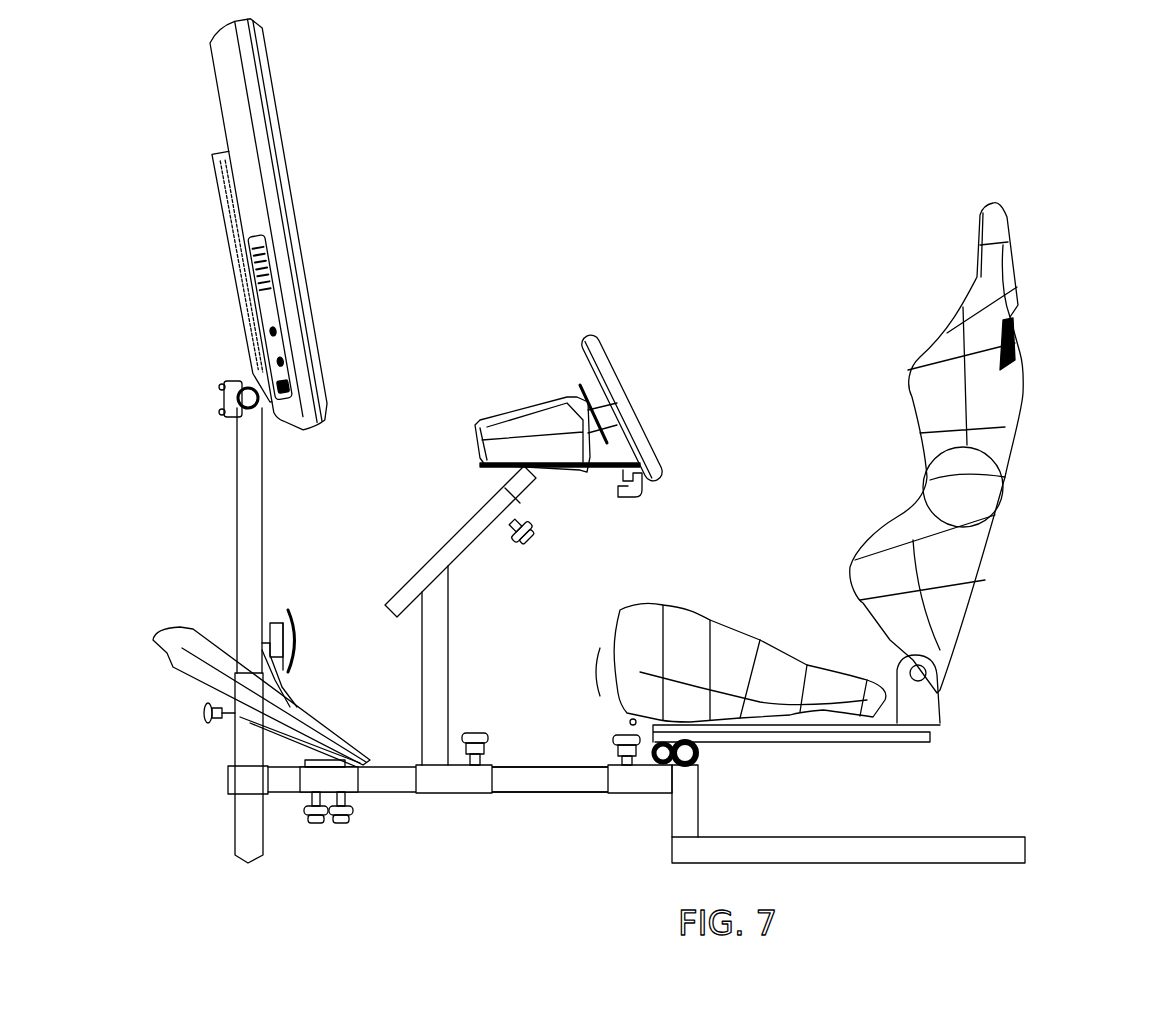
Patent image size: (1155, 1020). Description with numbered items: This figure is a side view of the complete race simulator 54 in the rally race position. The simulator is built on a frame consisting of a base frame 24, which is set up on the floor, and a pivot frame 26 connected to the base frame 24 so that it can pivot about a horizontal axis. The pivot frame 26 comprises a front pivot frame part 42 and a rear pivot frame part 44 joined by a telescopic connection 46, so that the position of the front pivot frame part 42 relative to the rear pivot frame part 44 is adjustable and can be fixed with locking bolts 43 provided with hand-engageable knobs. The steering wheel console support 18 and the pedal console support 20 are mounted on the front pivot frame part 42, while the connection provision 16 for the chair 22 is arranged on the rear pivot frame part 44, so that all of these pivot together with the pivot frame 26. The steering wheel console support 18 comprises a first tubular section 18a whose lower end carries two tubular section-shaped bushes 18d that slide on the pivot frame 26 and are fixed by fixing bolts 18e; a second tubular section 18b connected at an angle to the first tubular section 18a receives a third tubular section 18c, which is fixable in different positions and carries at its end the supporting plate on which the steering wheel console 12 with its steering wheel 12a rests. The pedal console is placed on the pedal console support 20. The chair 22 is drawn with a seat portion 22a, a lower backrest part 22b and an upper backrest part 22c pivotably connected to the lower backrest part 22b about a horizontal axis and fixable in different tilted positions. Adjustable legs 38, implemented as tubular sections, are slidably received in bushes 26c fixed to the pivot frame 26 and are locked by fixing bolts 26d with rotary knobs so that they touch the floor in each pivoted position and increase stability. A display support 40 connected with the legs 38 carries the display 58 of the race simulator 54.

The steering wheel console 12 is at (528, 410).
The steering wheel 12a is at (597, 337).
The connection provision 16 is at (920, 742).
The steering wheel console support 18 is at (491, 572).
The first tubular section 18a is at (438, 660).
The second tubular section 18b is at (448, 557).
The third tubular section 18c is at (522, 483).
The tubular section-shaped bushes 18d is at (490, 468).
The fixing bolts 18e is at (473, 728).
The pedal console support 20 is at (180, 668).
The chair 22 is at (1063, 323).
The seat cushion 22a is at (688, 635).
The lower backrest part 22b is at (960, 558).
The upper backrest part 22c is at (990, 415).
The base frame 24 is at (1003, 845).
The pivot frame 26 is at (530, 806).
The bushes 26c is at (247, 802).
The fixing bolts 26d is at (205, 722).
The adjustable legs 38 is at (248, 467).
The display support 40 is at (230, 203).
The front pivot frame part 42 is at (592, 782).
The locking bolts 43 is at (618, 735).
The rear pivot frame part 44 is at (640, 782).
The telescopic connection 46 is at (592, 752).
The race simulator 54 is at (995, 156).
The display 58 is at (230, 57).